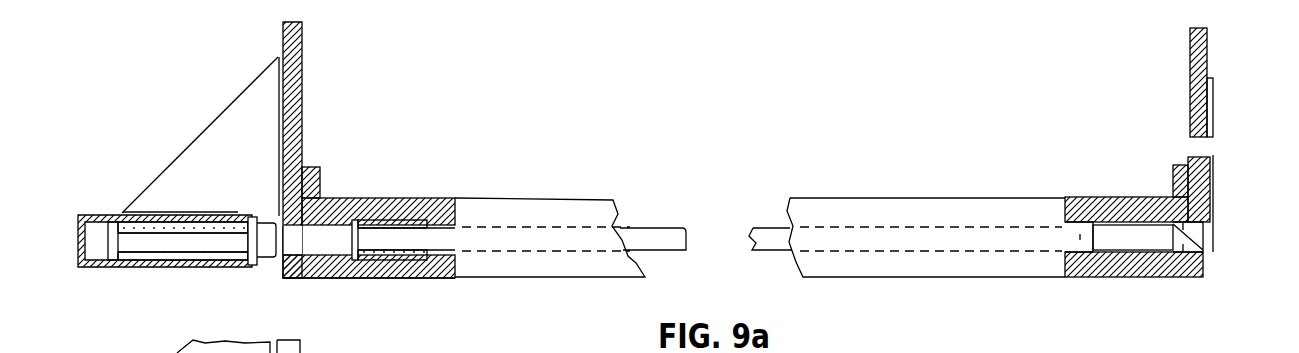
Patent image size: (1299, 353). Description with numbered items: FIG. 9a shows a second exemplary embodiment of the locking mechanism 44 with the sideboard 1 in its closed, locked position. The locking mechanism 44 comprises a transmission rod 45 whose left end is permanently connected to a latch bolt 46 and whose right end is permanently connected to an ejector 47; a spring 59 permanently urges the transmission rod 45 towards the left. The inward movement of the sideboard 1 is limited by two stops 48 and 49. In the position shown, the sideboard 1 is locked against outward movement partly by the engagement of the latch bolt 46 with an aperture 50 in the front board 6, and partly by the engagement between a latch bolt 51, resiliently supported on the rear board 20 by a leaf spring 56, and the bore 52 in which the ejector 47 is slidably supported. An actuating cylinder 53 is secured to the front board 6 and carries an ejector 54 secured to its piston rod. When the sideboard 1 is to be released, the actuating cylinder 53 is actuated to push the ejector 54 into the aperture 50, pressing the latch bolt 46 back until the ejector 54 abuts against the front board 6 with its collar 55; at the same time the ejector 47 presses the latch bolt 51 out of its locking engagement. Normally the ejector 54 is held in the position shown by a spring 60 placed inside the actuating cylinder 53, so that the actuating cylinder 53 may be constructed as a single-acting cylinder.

The sideboard 1 is at (827, 202).
The front board 6 is at (301, 99).
The rear board 20 is at (1200, 62).
The locking mechanism 44 is at (758, 169).
The transmission rod 45 is at (675, 228).
The latch bolt 46 is at (330, 237).
The ejector 47 is at (1117, 242).
The stop 48 is at (320, 193).
The stop 49 is at (1173, 180).
The aperture 50 is at (282, 216).
The latch bolt 51 is at (1205, 240).
The bore 52 is at (1183, 251).
The actuating cylinder 53 is at (103, 268).
The ejector 54 is at (268, 258).
The collar 55 is at (247, 268).
The leaf spring 56 is at (1213, 183).
The spring 59 is at (410, 225).
The spring 60 is at (193, 259).